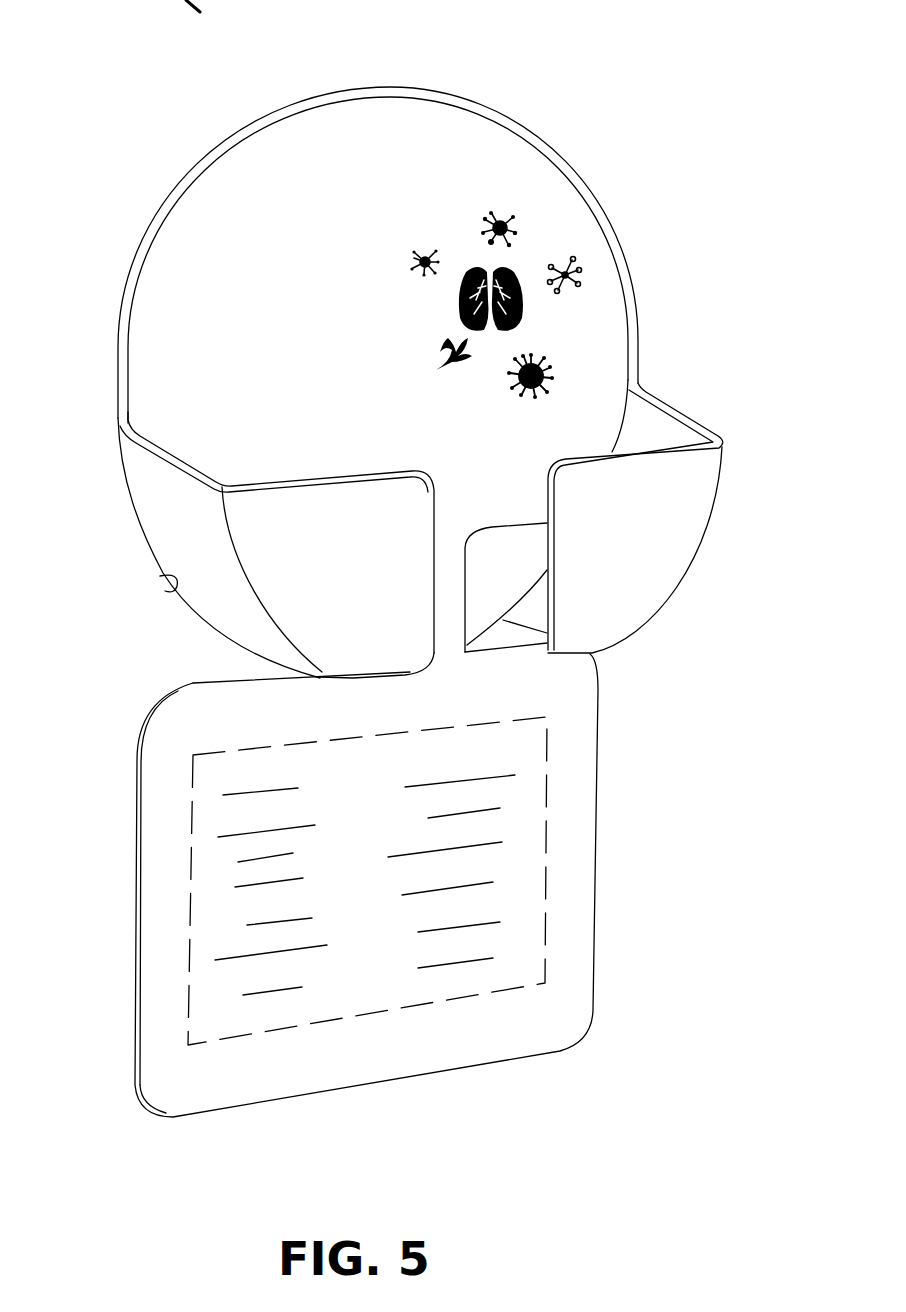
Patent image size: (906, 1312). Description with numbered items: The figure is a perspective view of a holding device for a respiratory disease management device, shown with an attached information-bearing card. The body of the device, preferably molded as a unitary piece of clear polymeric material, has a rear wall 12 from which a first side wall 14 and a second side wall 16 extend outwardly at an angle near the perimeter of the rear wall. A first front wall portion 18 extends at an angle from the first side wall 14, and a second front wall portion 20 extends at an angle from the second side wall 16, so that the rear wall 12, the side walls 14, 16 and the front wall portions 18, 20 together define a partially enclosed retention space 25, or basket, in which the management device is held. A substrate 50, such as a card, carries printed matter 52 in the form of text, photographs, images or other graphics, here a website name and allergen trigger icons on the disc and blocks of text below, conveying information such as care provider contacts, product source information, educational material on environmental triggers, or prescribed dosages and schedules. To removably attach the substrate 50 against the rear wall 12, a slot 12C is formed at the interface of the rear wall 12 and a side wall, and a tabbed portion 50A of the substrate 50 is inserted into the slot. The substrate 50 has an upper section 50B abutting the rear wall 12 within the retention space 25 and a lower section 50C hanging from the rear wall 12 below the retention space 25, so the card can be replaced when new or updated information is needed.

The rear wall 12 is at (122, 385).
The slot 12C is at (162, 578).
The first side wall 14 is at (123, 460).
The second side wall 16 is at (707, 420).
The first front wall portion 18 is at (403, 643).
The second front wall portion 20 is at (677, 548).
The retention space 25 is at (578, 415).
The substrate 50 is at (133, 868).
The tabbed portion 50A is at (150, 548).
The upper section 50B is at (327, 207).
The lower section 50C is at (374, 1060).
The printed matter 52 is at (227, 298).